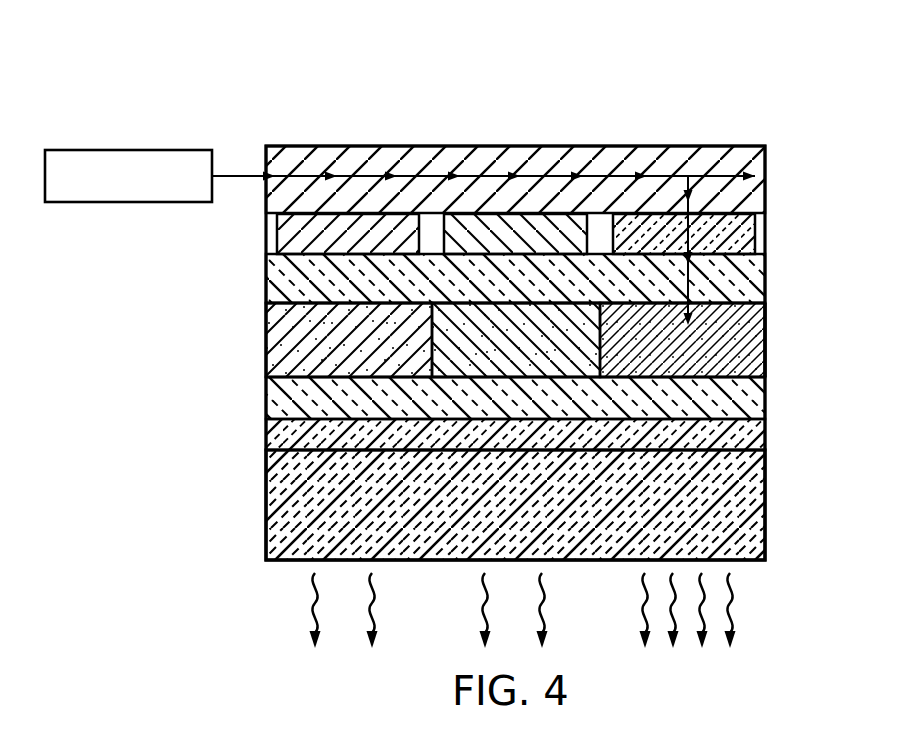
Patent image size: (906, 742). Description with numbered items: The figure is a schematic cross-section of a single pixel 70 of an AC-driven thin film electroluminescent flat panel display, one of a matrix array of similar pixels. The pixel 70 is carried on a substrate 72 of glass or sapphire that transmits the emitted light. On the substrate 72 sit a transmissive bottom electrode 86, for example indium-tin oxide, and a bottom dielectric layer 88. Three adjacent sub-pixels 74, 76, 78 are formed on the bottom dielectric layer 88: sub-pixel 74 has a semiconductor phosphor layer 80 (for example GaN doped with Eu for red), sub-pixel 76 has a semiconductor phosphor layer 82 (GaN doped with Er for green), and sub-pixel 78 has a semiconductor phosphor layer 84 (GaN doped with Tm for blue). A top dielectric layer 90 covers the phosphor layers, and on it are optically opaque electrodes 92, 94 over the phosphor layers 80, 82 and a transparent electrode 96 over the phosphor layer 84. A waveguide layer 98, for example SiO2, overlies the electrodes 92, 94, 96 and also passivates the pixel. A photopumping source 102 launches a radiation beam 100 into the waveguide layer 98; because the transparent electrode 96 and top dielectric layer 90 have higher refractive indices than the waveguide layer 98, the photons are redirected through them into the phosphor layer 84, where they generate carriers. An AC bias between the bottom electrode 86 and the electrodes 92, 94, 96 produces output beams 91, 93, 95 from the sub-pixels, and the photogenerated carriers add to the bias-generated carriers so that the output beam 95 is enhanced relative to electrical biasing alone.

The pixel 70 is at (206, 116).
The substrate 72 is at (758, 506).
The sub-pixel 74 is at (258, 320).
The sub-pixel 76 is at (516, 292).
The sub-pixel 78 is at (776, 322).
The semiconductor phosphor layer 80 is at (361, 348).
The semiconductor phosphor layer 82 is at (533, 350).
The semiconductor phosphor layer 84 is at (671, 350).
The bottom electrode 86 is at (758, 437).
The bottom dielectric layer 88 is at (758, 403).
The top dielectric layer 90 is at (757, 266).
The output beam 91 is at (372, 603).
The electrode 92 is at (350, 215).
The output beam 93 is at (542, 603).
The electrode 94 is at (536, 215).
The output beam 95 is at (730, 603).
The transparent electrode 96 is at (723, 222).
The waveguide layer 98 is at (757, 156).
The radiation beam 100 is at (379, 178).
The photopumping source 102 is at (101, 150).